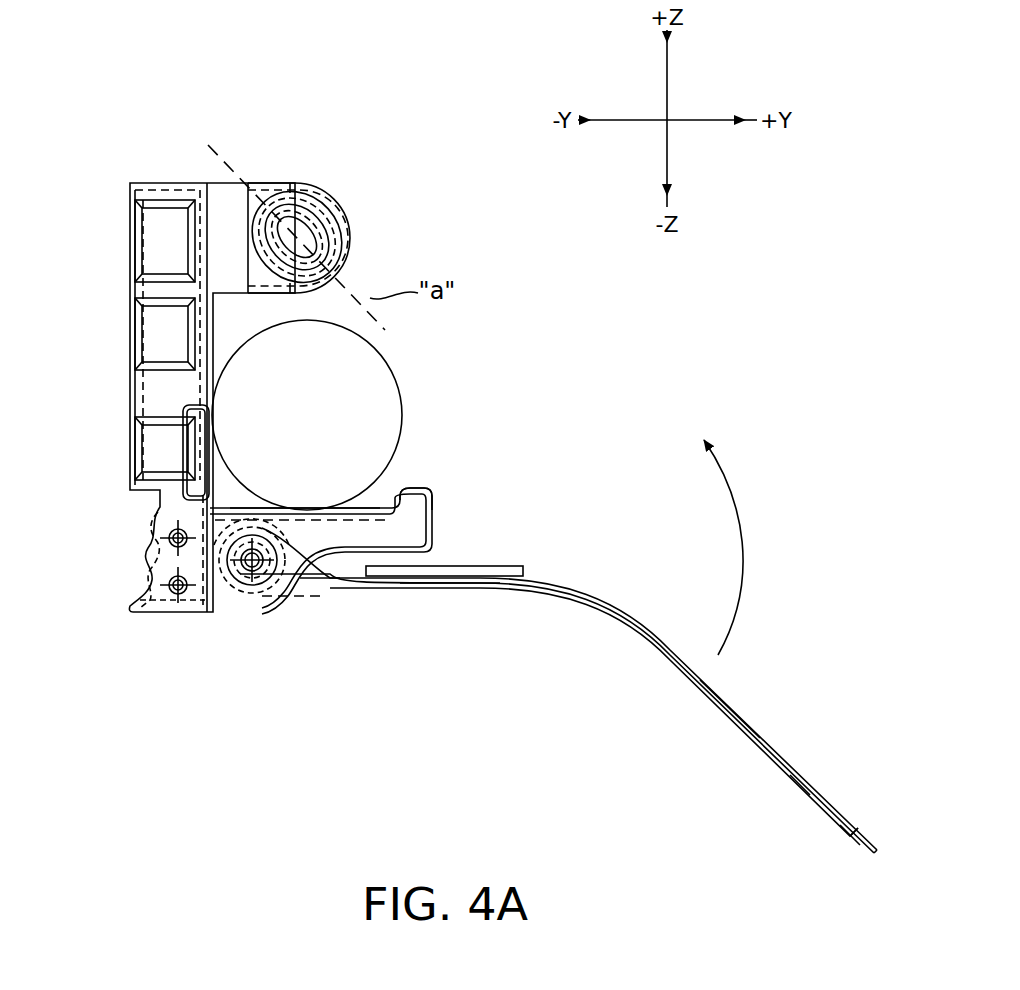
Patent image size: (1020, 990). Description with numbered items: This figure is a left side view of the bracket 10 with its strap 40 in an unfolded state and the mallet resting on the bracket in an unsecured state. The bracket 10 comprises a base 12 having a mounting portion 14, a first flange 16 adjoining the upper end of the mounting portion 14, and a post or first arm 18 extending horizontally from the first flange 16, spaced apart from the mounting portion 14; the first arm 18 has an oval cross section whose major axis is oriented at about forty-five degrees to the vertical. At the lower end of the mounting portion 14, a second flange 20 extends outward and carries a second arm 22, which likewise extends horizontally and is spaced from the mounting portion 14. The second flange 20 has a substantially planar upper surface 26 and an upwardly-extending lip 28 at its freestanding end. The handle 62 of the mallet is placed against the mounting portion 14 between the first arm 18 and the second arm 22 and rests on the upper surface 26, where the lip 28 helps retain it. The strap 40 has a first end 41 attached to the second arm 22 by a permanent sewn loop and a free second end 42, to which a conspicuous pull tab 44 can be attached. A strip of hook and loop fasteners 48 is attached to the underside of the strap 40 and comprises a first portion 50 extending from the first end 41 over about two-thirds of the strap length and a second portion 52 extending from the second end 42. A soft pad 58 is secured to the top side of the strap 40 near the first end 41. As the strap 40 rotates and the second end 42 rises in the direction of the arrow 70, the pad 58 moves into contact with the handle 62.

The bracket 10 is at (106, 146).
The base 12 is at (118, 203).
The mounting portion 14 is at (193, 393).
The first flange 16 is at (230, 203).
The first arm 18 is at (303, 240).
The second flange 20 is at (449, 511).
The second arm 22 is at (247, 570).
The upper surface 26 is at (380, 508).
The upwardly-extending lip 28 is at (420, 487).
The strap 40 is at (790, 748).
The first end 41 is at (323, 600).
The second end 42 is at (824, 838).
The pull tab 44 is at (855, 842).
The strip of hook and loop fasteners 48 is at (783, 800).
The first portion 50 is at (488, 590).
The second portion 52 is at (757, 742).
The pad 58 is at (503, 566).
The handle 62 is at (372, 376).
The arrow 70 is at (745, 548).